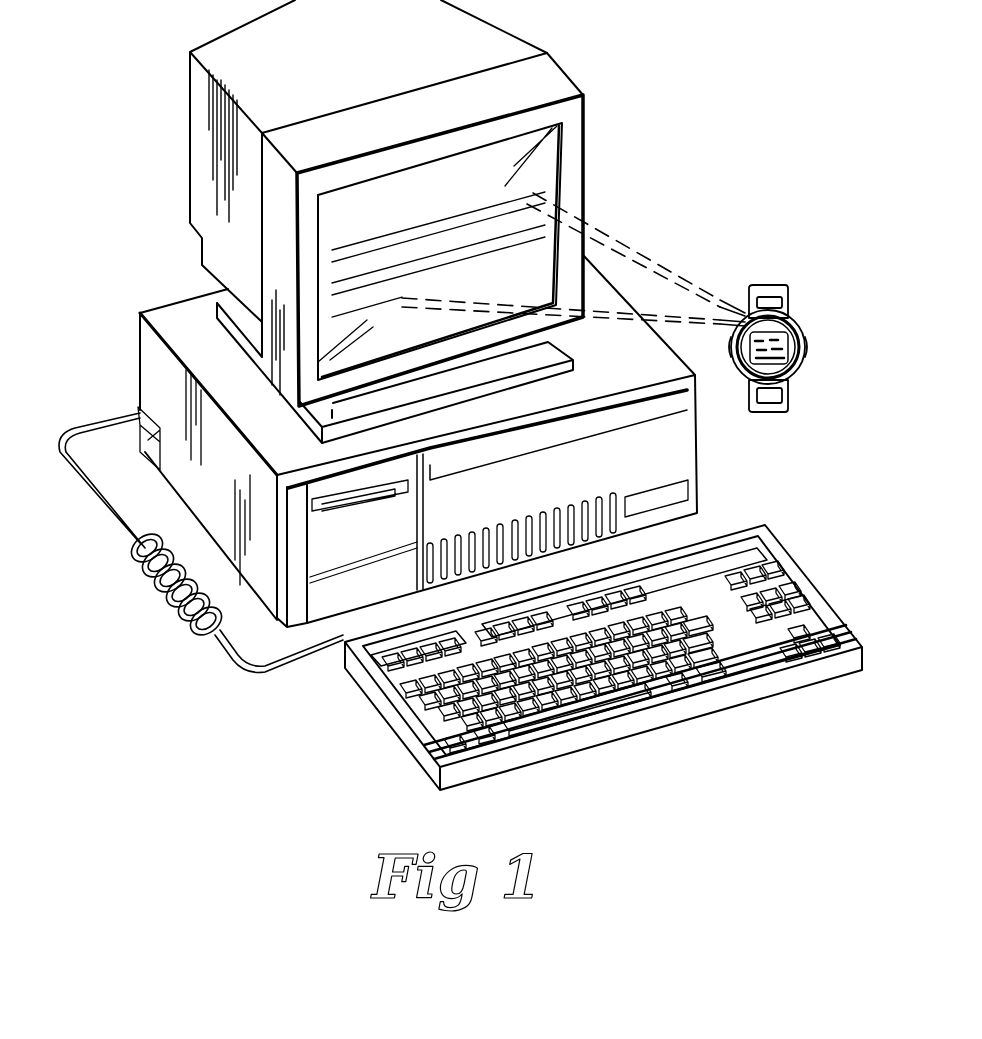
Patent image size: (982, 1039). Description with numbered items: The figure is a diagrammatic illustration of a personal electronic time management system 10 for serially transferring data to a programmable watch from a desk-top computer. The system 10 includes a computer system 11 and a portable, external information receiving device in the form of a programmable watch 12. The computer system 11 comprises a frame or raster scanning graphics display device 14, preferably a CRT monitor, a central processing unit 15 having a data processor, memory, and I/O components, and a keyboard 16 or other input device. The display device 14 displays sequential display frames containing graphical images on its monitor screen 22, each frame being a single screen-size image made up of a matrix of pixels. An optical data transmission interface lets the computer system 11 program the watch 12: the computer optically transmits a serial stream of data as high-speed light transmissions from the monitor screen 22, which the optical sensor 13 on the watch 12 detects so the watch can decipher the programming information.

The personal electronic time management system 10 is at (460, 395).
The computer system 11 is at (460, 395).
The programmable watch 12 is at (788, 314).
The optical sensor 13 is at (788, 320).
The graphics display device 14 is at (550, 80).
The central processing unit 15 is at (680, 462).
The keyboard 16 is at (790, 563).
The monitor screen 22 is at (547, 175).